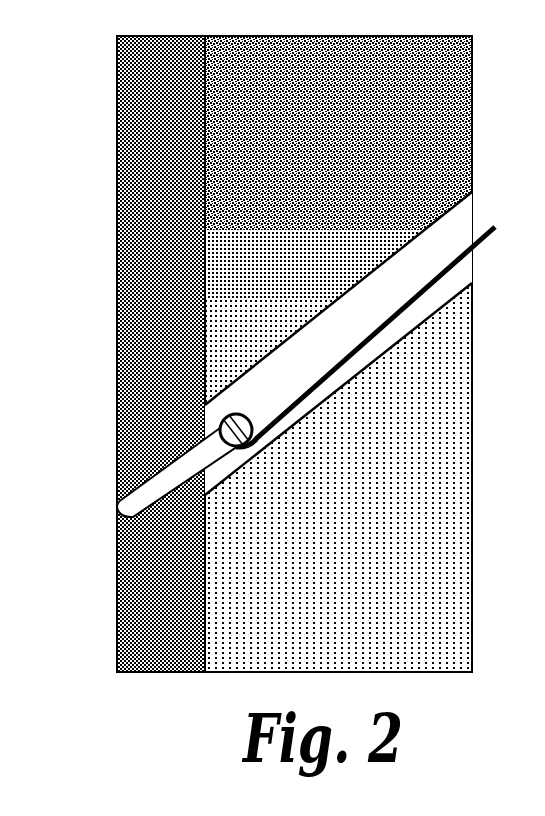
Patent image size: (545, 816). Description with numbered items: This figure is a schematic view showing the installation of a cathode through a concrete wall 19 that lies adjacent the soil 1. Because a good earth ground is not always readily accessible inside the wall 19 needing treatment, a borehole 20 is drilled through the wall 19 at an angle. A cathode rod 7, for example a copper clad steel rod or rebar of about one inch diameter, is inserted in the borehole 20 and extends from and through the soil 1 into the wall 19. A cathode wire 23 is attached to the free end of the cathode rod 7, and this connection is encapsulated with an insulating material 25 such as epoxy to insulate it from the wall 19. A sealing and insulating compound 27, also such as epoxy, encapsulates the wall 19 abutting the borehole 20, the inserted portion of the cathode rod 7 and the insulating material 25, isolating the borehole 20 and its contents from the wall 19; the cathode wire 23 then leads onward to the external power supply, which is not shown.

The soil 1 is at (163, 660).
The cathode rod 7 is at (122, 499).
The concrete wall 19 is at (364, 661).
The borehole 20 is at (352, 342).
The cathode wire 23 is at (483, 240).
The insulating material 25 is at (212, 406).
The sealing and insulating compound 27 is at (407, 222).